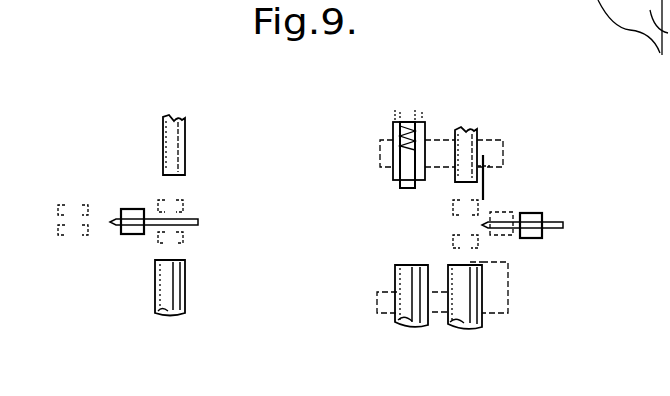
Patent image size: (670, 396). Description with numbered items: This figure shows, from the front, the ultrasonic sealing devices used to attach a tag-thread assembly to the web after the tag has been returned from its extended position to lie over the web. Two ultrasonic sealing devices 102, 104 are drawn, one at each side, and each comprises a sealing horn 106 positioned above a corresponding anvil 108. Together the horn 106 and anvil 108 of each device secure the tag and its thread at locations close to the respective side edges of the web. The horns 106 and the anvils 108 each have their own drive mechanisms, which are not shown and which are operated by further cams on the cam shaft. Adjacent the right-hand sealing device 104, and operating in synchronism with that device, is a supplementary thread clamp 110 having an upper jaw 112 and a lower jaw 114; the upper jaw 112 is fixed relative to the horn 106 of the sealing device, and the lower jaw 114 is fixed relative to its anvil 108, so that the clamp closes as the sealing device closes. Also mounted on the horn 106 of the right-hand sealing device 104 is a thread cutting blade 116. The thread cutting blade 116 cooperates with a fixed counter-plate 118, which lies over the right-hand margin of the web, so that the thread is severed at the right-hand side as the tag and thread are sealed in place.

The ultrasonic sealing device 102 is at (145, 152).
The right-hand ultrasonic sealing device 104 is at (482, 138).
The sealing horn 106 is at (178, 137).
The anvil 108 is at (178, 295).
The supplementary thread clamp 110 is at (373, 138).
The upper jaw 112 is at (410, 178).
The lower jaw 114 is at (402, 308).
The thread cutting blade 116 is at (487, 185).
The fixed counter-plate 118 is at (563, 222).